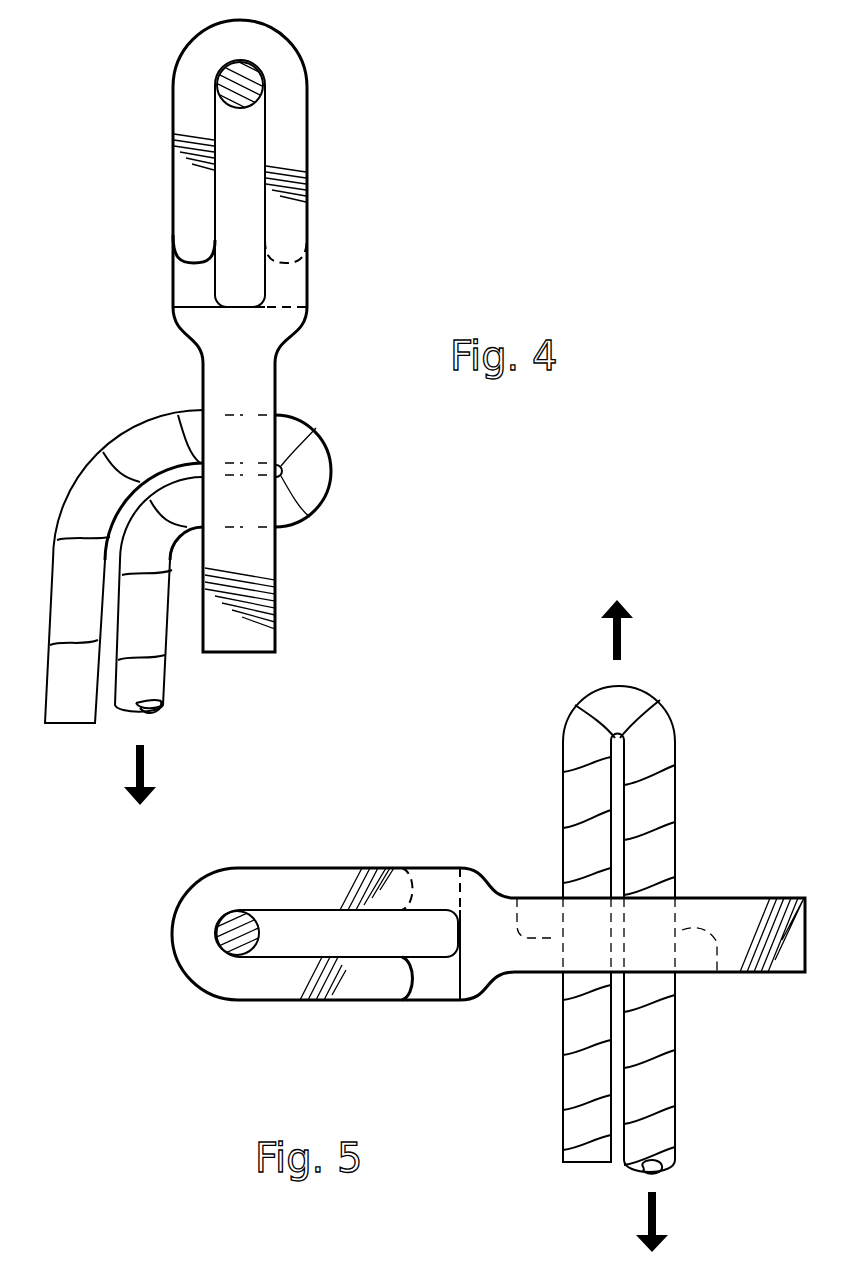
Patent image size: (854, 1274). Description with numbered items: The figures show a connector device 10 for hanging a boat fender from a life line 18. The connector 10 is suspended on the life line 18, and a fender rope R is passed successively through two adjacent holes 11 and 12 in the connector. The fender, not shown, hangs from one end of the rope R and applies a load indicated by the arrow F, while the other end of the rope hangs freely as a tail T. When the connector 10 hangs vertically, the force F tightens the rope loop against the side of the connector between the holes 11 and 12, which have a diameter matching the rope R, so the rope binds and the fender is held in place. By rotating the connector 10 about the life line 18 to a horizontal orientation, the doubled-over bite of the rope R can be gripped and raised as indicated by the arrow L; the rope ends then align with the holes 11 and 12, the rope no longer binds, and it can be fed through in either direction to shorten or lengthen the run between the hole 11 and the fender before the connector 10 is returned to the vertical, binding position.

In FIG. 4, the connector device 10 is at (275, 632).
In FIG. 5, the connector device 10 is at (735, 898).
In FIG. 4, the hole 11 is at (230, 546).
In FIG. 5, the hole 11 is at (716, 985).
In FIG. 4, the hole 12 is at (238, 402).
In FIG. 5, the hole 12 is at (520, 882).
In FIG. 4, the life line 18 is at (246, 106).
In FIG. 5, the life line 18 is at (262, 936).
In FIG. 4, the fender rope R is at (125, 432).
In FIG. 5, the fender rope R is at (668, 708).
In FIG. 4, the force (arrow) F is at (144, 768).
In FIG. 5, the force (arrow) F is at (656, 1212).
In FIG. 5, the arrow (lifting direction) L is at (622, 630).
In FIG. 5, the tail end of rope T is at (563, 1140).